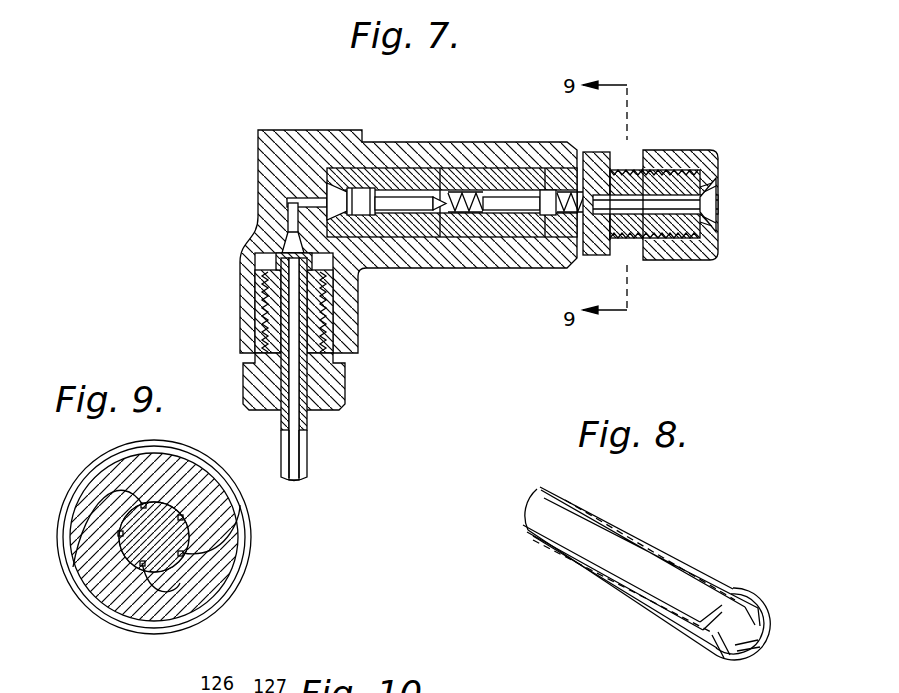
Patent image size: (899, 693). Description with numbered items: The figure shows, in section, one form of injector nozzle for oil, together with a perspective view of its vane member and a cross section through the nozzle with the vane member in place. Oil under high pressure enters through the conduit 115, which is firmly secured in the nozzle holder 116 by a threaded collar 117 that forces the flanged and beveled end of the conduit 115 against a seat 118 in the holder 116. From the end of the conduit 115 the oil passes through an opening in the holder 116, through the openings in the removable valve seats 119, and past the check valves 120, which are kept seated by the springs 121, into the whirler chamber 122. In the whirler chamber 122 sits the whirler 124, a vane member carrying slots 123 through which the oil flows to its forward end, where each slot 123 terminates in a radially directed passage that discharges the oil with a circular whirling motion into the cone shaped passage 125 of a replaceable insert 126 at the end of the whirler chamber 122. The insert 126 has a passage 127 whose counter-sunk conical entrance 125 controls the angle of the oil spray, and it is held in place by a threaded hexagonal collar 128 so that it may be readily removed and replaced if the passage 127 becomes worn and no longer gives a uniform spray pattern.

In FIG. 7, the conduit 115 is at (303, 447).
In FIG. 7, the nozzle holder 116 is at (250, 242).
In FIG. 7, the threaded collar 117 is at (342, 383).
In FIG. 7, the seat 118 is at (318, 254).
In FIG. 7, the removable valve seat 119 is at (390, 180).
In FIG. 7, the check valve 120 is at (447, 217).
In FIG. 7, the spring 121 is at (448, 182).
In FIG. 7, the whirler chamber 122 is at (640, 178).
In FIG. 9, the whirler chamber 122 is at (150, 624).
In FIG. 7, the slot 123 is at (615, 215).
In FIG. 9, the slot 123 is at (183, 553).
In FIG. 8, the slot 123 is at (578, 466).
In FIG. 7, the whirler 124 is at (653, 212).
In FIG. 9, the whirler 124 is at (135, 500).
In FIG. 8, the whirler 124 is at (655, 578).
In FIG. 7, the cone shaped passage 125 is at (722, 160).
In FIG. 7, the replaceable insert 126 is at (713, 238).
In FIG. 7, the passage 127 is at (708, 208).
In FIG. 7, the threaded hexagonal collar 128 is at (682, 152).